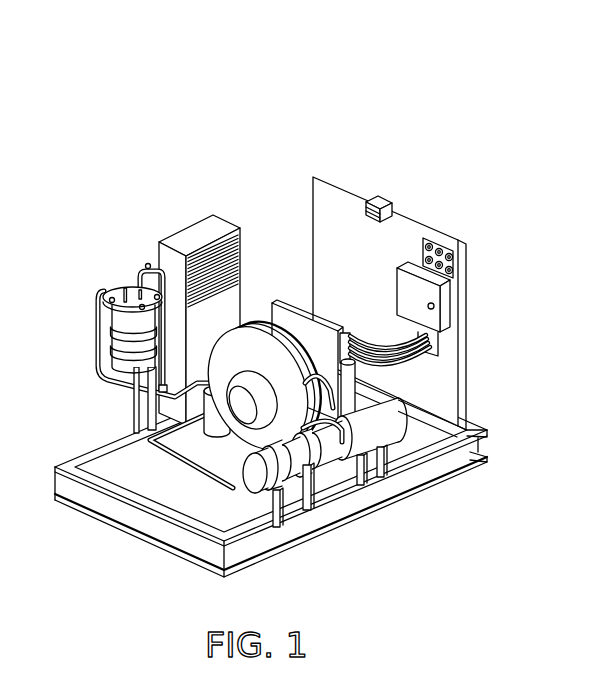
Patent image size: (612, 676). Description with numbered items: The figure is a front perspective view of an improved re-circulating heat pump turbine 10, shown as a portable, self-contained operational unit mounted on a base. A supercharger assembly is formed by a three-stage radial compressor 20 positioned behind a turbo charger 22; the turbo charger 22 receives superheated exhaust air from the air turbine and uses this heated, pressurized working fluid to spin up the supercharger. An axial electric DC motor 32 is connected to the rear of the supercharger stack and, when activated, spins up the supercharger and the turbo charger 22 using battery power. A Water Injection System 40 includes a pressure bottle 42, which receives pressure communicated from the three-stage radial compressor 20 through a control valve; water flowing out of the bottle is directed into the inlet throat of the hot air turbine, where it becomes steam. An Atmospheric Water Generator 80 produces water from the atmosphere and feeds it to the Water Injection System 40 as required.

The re-circulating heat pump turbine 10 is at (172, 150).
The 3-stage radial compressor 20 is at (245, 497).
The turbo charger 22 is at (393, 428).
The axial electric DC motor 32 is at (480, 461).
The Water Injection System 40 is at (180, 210).
The pressure bottle 42 is at (127, 342).
The Atmospheric Water Generator 80 is at (215, 233).